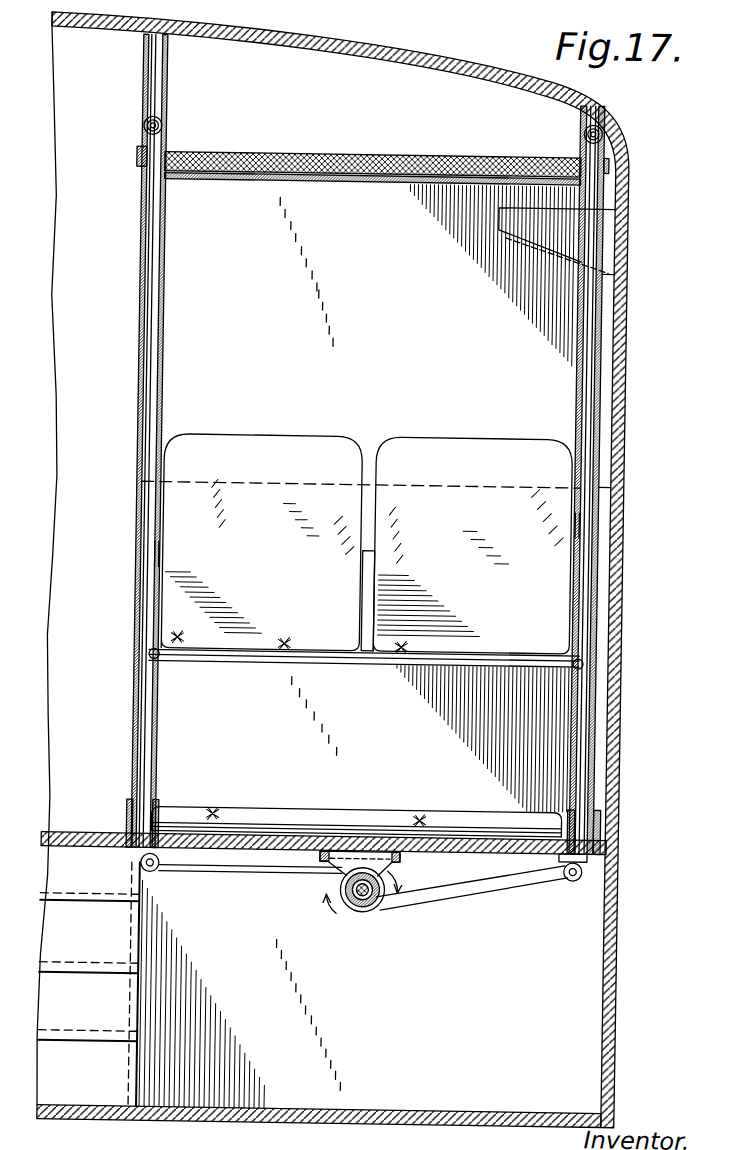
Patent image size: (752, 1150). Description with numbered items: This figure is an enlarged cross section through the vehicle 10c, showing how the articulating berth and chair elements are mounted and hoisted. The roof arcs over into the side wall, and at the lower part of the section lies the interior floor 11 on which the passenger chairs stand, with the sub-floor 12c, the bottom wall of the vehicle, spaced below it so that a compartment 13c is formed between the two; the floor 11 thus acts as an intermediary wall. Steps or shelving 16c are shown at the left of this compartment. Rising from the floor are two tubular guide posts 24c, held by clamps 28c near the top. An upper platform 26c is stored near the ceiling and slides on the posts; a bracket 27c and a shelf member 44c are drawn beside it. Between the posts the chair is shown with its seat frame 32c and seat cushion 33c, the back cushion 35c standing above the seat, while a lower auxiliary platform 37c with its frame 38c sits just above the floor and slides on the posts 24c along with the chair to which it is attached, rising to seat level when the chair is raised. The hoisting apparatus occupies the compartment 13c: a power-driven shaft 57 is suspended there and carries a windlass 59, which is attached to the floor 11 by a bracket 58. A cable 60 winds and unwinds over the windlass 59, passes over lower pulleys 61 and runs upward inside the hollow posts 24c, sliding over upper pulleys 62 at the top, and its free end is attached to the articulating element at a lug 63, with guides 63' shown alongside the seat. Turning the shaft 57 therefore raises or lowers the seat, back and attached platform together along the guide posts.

The vehicle 10c is at (621, 266).
The floor 11 is at (433, 47).
The sub-floor 12c is at (403, 1113).
The compartment 13c is at (353, 1015).
The steps 16c is at (108, 934).
The guide post 24c is at (160, 263).
The platform 26c is at (377, 183).
The bracket 27c is at (535, 220).
The clamps 28c is at (131, 161).
The seat frame 32c is at (376, 625).
The seat cushion 33c is at (279, 657).
The back cushion 35c is at (399, 457).
The platform 37c is at (251, 817).
The platform frame 38c is at (381, 822).
The upper berth shelf 44c is at (336, 153).
The shaft 57 is at (362, 891).
The bracket 58 is at (324, 866).
The windlass 59 is at (370, 912).
The cable 60 is at (149, 300).
The pulley 61 is at (164, 874).
The pulley 62 is at (157, 129).
The lug 63 is at (366, 640).
The guides 63' is at (366, 532).